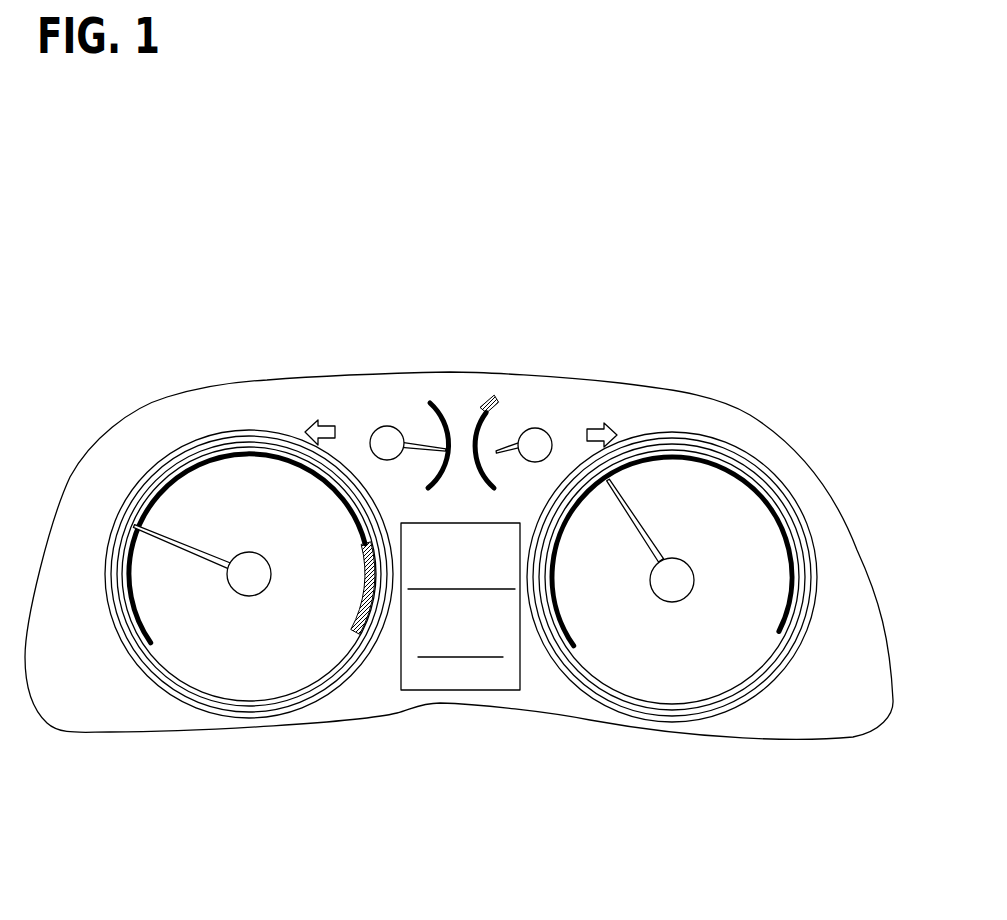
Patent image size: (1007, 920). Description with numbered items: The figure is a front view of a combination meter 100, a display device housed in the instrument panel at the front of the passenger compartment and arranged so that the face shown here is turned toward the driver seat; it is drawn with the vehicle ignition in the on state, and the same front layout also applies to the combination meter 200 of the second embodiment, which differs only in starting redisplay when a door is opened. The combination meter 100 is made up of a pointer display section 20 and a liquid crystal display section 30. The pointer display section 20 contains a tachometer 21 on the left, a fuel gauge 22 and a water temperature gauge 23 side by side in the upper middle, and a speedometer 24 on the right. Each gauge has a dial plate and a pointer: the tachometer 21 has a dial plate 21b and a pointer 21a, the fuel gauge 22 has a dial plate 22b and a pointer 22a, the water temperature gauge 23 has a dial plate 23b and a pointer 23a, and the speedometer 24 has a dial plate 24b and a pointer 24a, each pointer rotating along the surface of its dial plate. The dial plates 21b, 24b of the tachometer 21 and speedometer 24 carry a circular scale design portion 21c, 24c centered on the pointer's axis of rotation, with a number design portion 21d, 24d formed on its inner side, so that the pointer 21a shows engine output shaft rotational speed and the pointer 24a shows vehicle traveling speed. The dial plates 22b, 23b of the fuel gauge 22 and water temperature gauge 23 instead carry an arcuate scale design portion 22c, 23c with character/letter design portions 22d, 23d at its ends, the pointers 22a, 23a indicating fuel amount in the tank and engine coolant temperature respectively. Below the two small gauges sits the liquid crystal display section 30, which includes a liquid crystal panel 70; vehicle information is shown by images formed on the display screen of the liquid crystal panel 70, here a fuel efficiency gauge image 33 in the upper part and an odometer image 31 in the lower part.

The combination meter 100 is at (461, 519).
The combination meter 200 is at (824, 440).
The pointer display section 20 is at (228, 197).
The tachometer 21 is at (277, 490).
The pointer 21a is at (133, 551).
The dial plate 21b is at (133, 481).
The scale design portion 21c is at (170, 507).
The number design portion 21d is at (241, 470).
The fuel gauge 22 is at (425, 418).
The pointer 22a is at (407, 437).
The dial plate 22b is at (405, 422).
The scale design portion 22c is at (453, 413).
The character/letter design portions 22d is at (415, 393).
The water temperature gauge 23 is at (502, 418).
The pointer 23a is at (537, 424).
The dial plate 23b is at (508, 441).
The scale design portion 23c is at (484, 416).
The character/letter design portions 23d is at (520, 423).
The speedometer 24 is at (646, 490).
The pointer 24a is at (648, 510).
The dial plate 24b is at (703, 490).
The scale design portion 24c is at (773, 495).
The number design portion 24d is at (797, 553).
The liquid crystal display section 30 is at (466, 654).
The odometer image 31 is at (485, 650).
The fuel efficiency gauge image 33 is at (487, 582).
The liquid crystal panel 70 is at (415, 625).